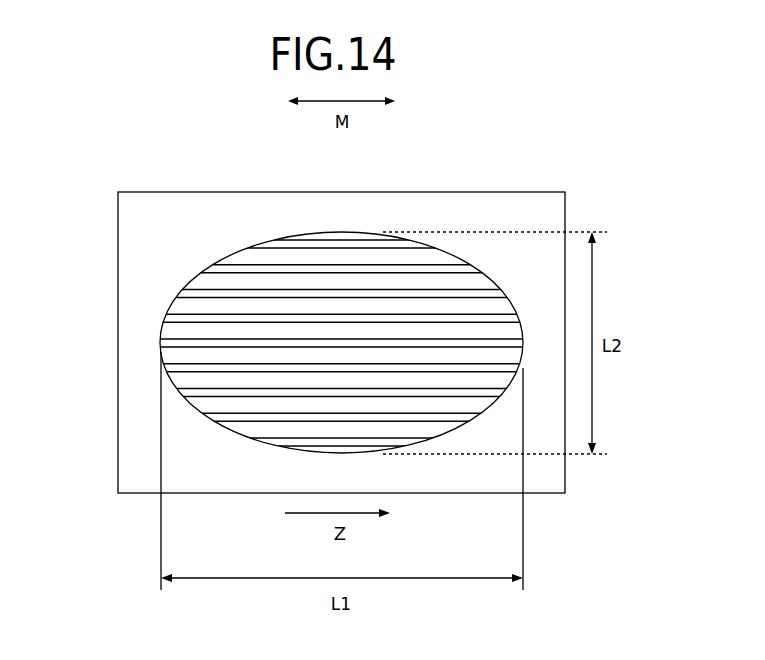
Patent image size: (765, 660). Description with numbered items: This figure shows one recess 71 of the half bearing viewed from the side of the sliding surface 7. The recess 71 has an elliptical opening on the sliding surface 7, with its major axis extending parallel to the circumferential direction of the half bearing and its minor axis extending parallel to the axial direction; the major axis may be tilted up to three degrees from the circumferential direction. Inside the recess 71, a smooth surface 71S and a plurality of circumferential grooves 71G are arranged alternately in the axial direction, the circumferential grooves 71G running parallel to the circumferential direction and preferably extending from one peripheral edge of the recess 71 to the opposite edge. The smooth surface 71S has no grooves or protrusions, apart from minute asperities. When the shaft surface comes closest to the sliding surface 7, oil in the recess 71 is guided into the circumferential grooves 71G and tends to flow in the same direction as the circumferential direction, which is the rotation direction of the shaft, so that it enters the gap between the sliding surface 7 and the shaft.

The sliding surface 7 is at (517, 206).
The recess 71 is at (342, 232).
The circumferential groove 71G is at (228, 267).
The smooth surface 71S is at (169, 333).